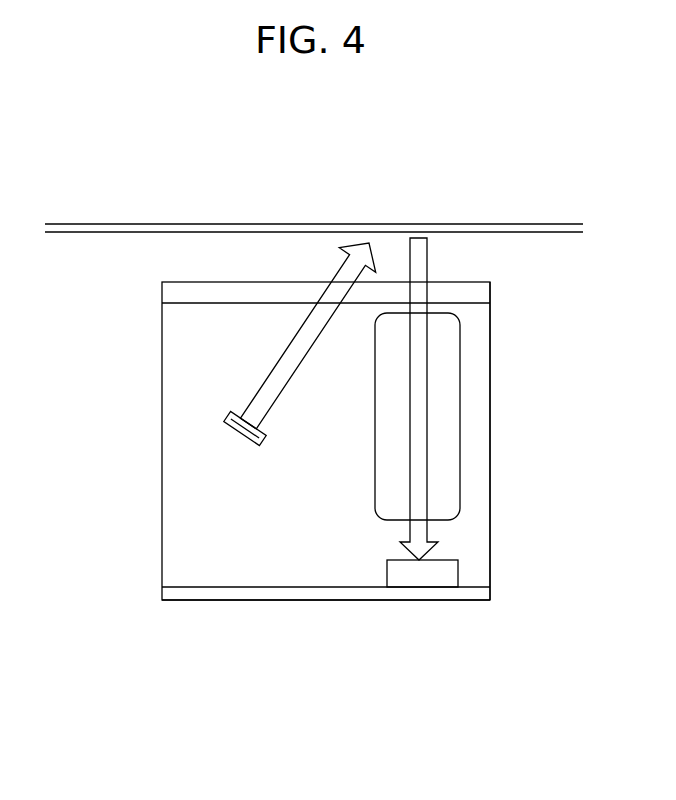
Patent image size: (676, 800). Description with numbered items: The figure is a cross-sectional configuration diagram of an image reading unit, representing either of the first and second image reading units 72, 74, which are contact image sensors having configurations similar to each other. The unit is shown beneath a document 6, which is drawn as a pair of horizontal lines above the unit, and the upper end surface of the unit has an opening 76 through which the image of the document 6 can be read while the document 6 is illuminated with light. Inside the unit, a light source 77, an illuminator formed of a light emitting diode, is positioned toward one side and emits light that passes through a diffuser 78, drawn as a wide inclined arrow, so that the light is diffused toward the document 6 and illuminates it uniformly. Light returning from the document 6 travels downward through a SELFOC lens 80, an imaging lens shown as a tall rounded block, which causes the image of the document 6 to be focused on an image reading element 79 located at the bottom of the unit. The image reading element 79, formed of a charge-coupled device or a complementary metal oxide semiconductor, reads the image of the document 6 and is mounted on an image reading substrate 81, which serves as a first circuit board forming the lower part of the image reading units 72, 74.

The document 6 is at (147, 224).
The first image reading unit 72 is at (260, 441).
The second image reading unit 74 is at (160, 440).
The opening 76 is at (490, 395).
The light source 77 is at (246, 447).
The diffuser 78 is at (233, 411).
The image reading element 79 is at (458, 572).
The SELFOC lens 80 is at (460, 468).
The image reading substrate 81 is at (286, 602).